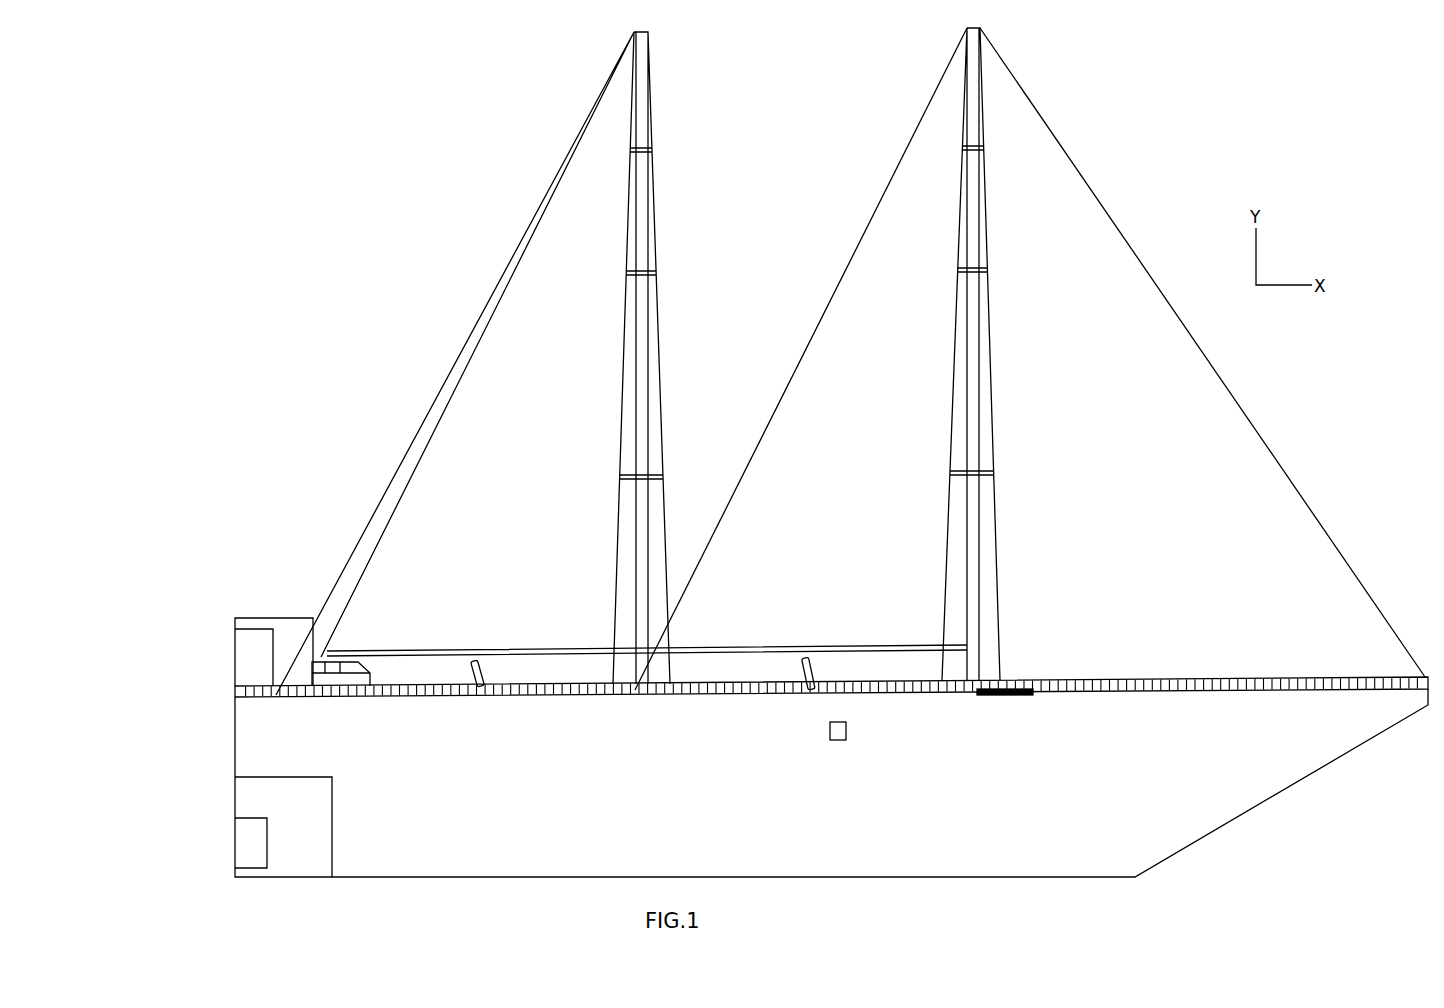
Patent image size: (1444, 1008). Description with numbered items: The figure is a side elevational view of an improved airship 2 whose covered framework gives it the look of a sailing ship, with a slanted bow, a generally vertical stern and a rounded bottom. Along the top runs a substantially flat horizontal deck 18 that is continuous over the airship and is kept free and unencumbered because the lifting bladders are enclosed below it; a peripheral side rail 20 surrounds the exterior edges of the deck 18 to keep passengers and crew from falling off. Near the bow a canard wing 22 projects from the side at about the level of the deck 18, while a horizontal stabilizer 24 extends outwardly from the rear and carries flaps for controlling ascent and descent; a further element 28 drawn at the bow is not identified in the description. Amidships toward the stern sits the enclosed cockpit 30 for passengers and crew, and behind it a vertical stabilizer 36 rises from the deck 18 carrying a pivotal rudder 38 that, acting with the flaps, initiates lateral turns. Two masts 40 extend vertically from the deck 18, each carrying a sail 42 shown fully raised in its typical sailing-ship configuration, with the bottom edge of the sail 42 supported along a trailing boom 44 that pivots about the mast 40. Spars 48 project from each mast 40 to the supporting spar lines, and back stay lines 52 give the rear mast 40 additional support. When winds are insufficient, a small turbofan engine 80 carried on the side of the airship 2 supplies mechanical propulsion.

The airship 2 is at (1145, 264).
The deck 18 is at (1070, 688).
The peripheral side rail 20 is at (1118, 678).
The canard wing 22 is at (1030, 681).
The horizontal stabilizer 24 is at (315, 820).
The bow thruster / compartment 28 is at (247, 846).
The cockpit 30 is at (342, 678).
The vertical stabilizer 36 is at (278, 628).
The rudder 38 is at (247, 660).
The mast 40 is at (641, 340).
The sail 42 is at (850, 361).
The boom 44 is at (968, 646).
The spar 48 is at (648, 150).
The back stay line 52 is at (470, 666).
The turbofan engine 80 is at (838, 733).